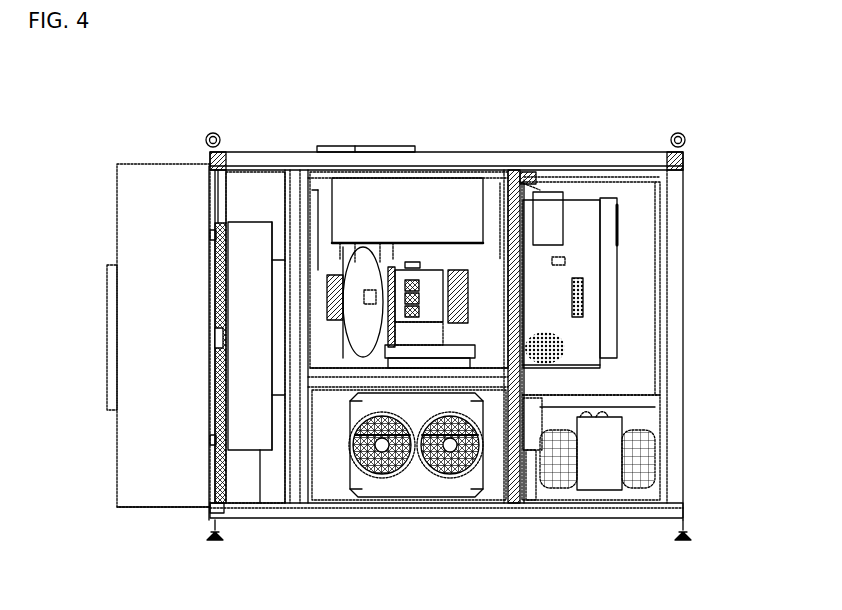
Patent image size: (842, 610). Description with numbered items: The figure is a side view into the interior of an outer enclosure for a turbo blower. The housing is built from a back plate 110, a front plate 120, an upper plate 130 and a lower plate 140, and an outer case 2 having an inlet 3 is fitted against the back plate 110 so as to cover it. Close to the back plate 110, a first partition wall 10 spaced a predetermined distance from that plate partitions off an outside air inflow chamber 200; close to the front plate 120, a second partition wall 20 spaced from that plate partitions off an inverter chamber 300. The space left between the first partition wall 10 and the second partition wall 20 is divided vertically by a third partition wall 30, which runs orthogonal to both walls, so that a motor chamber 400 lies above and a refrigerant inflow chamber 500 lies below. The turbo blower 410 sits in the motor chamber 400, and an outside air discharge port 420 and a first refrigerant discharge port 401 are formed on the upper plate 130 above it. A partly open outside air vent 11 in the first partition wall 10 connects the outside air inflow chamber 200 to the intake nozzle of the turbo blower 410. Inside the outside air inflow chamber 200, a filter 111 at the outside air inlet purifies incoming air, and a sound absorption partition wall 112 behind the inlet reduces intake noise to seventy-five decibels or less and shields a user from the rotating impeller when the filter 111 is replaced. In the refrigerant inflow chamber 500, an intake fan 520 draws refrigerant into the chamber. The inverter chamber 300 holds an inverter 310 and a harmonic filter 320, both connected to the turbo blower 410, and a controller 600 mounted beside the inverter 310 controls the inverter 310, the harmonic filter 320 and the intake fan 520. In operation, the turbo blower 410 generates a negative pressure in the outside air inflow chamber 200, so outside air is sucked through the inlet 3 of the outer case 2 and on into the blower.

The outer case 2 is at (165, 165).
The inlet 3 is at (107, 340).
The first partition wall 10 is at (297, 185).
The outside air vent 11 is at (372, 470).
The second partition wall 20 is at (528, 180).
The third partition wall 30 is at (500, 500).
The back plate 110 is at (215, 490).
The filter 111 is at (213, 235).
The sound absorption partition wall 112 is at (250, 450).
The front plate 120 is at (688, 338).
The upper plate 130 is at (607, 152).
The lower plate 140 is at (550, 518).
The outside air inflow chamber 200 is at (250, 188).
The inverter chamber 300 is at (652, 418).
The inverter 310 is at (590, 297).
The harmonic filter 320 is at (598, 480).
The motor chamber 400 is at (492, 250).
The first refrigerant discharge port 401 is at (407, 148).
The turbo blower 410 is at (432, 248).
The outside air discharge port 420 is at (333, 146).
The refrigerant inflow chamber 500 is at (346, 480).
The intake fan 520 is at (420, 490).
The controller 600 is at (620, 234).